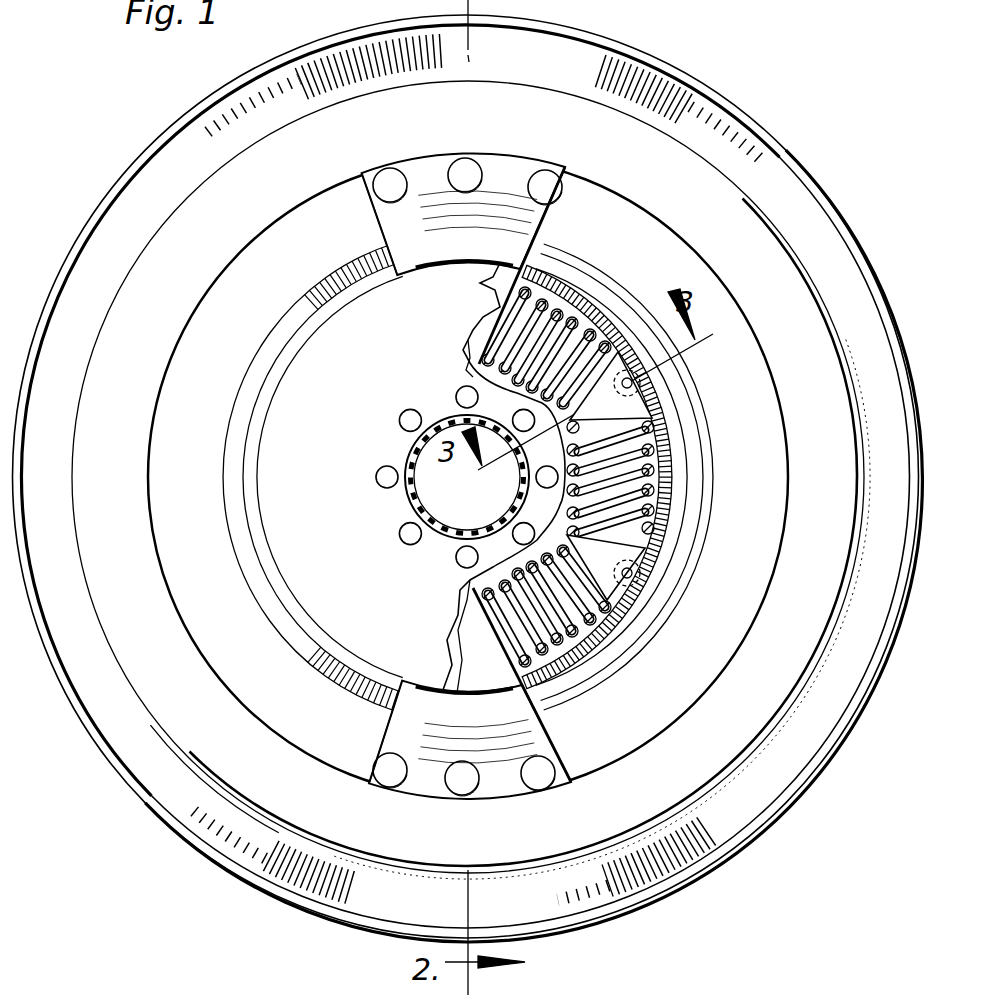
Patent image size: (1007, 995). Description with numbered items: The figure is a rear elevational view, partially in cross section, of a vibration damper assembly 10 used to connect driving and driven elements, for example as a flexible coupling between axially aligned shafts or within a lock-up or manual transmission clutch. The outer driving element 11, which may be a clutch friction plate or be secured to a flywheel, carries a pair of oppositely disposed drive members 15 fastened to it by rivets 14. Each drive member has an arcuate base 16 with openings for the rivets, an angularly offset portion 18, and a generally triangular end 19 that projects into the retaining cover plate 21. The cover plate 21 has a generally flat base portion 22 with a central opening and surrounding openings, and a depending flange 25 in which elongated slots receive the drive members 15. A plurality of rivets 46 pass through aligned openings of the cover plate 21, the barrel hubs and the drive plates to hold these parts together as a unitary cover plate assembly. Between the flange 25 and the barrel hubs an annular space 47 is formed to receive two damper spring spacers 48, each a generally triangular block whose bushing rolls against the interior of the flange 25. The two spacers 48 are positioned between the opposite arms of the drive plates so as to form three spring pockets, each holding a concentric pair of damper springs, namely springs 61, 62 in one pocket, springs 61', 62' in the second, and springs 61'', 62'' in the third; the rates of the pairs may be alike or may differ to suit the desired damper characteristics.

The vibration damper assembly 10 is at (776, 116).
The driving element 11 is at (812, 236).
The rivets 14 is at (470, 130).
The drive members 15 is at (556, 236).
The arcuate base 16 is at (506, 176).
The angularly offset portion 18 is at (380, 225).
The triangular end 19 is at (490, 305).
The cover plate 21 is at (322, 322).
The flat base portion 22 is at (330, 505).
The flange 25 is at (678, 438).
The rivets 46 is at (455, 398).
The annular space 47 is at (585, 652).
The damper spring spacers 48 is at (650, 390).
The damper spring 61 is at (500, 588).
The damper spring 61' is at (565, 323).
The damper spring 61'' is at (672, 477).
The damper spring 62 is at (497, 643).
The damper spring 62' is at (494, 365).
The damper spring 62'' is at (667, 479).